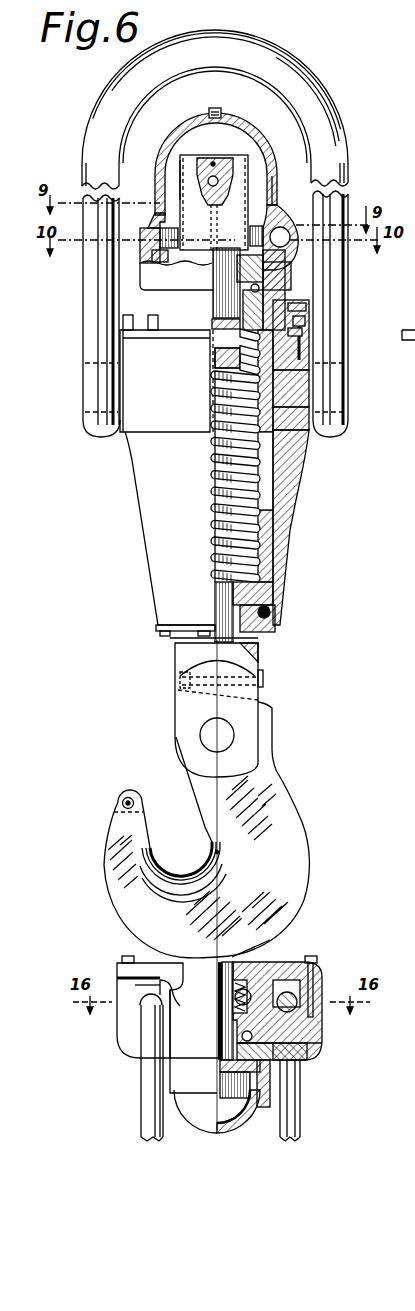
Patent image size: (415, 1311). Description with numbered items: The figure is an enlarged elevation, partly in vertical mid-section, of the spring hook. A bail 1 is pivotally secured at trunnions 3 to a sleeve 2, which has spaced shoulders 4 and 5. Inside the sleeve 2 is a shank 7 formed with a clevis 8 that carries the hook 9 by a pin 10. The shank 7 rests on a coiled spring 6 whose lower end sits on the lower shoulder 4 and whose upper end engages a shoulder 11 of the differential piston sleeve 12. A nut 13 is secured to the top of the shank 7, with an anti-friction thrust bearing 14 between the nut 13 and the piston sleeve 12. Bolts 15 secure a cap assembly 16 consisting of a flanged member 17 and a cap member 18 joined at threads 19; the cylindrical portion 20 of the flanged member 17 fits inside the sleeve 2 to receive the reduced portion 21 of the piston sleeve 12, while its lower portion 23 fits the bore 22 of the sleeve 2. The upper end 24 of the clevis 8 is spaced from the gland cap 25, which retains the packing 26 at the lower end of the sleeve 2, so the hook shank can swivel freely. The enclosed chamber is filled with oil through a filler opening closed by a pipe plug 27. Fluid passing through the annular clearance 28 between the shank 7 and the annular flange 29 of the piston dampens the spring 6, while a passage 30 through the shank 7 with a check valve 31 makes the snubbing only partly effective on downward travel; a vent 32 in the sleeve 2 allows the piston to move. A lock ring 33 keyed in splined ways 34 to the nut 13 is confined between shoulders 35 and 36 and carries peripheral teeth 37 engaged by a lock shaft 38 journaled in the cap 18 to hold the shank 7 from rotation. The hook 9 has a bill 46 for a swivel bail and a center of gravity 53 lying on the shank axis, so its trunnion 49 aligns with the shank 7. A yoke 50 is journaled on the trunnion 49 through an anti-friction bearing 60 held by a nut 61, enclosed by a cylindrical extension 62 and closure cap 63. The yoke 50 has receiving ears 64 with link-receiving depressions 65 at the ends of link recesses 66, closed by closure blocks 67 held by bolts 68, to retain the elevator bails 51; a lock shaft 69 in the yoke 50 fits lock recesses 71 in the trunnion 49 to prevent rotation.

The bail 1 is at (318, 93).
The sleeve 2 is at (296, 474).
The trunnions 3 is at (96, 377).
The lower shoulder 4 is at (275, 593).
The upper shoulder 5 is at (283, 506).
The coiled spring 6 is at (262, 542).
The shank 7 is at (224, 608).
The clevis 8 is at (188, 658).
The hook 9 is at (306, 846).
The pin 10 is at (200, 736).
The shoulder 11 is at (276, 312).
The differential piston sleeve 12 is at (292, 334).
The nut 13 is at (244, 188).
The thrust bearing 14 is at (263, 294).
The bolts 15 is at (122, 320).
The cap assembly 16 is at (262, 134).
The flanged member 17 is at (302, 314).
The cap member 18 is at (272, 162).
The threads 19 is at (292, 270).
The cylindrical portion 20 is at (272, 382).
The reduced portion 21 is at (268, 363).
The bore 22 is at (290, 460).
The lower portion 23 is at (312, 420).
The upper end 24 is at (176, 642).
The gland cap 25 is at (262, 641).
The packing 26 is at (284, 612).
The pipe plug 27 is at (220, 110).
The annular clearance 28 is at (216, 300).
The annular flange 29 is at (216, 320).
The passage 30 is at (216, 353).
The check valve 31 is at (214, 176).
The vent 32 is at (300, 404).
The lock ring 33 is at (172, 238).
The splined ways 34 is at (181, 166).
The shoulder 35 is at (156, 221).
The shoulder 36 is at (170, 264).
The teeth 37 is at (176, 227).
The lock shaft 38 is at (285, 228).
The bill 46 is at (112, 832).
The trunnion 49 is at (248, 956).
The yoke 50 is at (326, 1031).
The bails 51 is at (140, 1093).
The center of gravity 53 is at (220, 852).
The anti-friction bearing 60 is at (318, 1044).
The nut 61 is at (240, 1118).
The cylindrical extension 62 is at (270, 1078).
The closure cap 63 is at (211, 1120).
The receiving ears 64 is at (118, 1031).
The link-receiving depressions 65 is at (173, 1000).
The link recesses 66 is at (300, 982).
The closure blocks 67 is at (134, 988).
The bolts 68 is at (128, 957).
The lock shaft 69 is at (233, 986).
The lock recesses 71 is at (236, 1000).